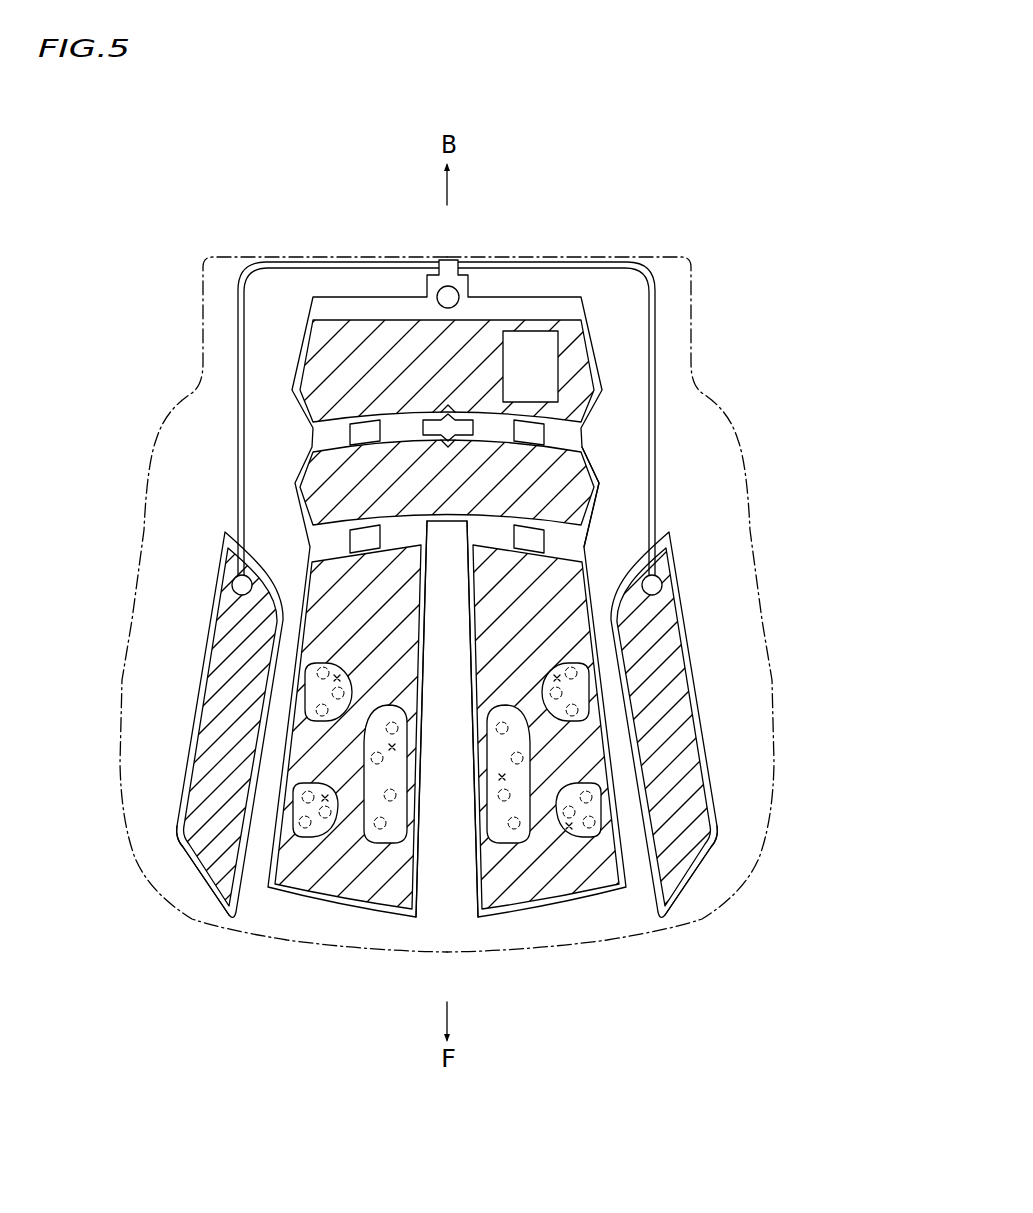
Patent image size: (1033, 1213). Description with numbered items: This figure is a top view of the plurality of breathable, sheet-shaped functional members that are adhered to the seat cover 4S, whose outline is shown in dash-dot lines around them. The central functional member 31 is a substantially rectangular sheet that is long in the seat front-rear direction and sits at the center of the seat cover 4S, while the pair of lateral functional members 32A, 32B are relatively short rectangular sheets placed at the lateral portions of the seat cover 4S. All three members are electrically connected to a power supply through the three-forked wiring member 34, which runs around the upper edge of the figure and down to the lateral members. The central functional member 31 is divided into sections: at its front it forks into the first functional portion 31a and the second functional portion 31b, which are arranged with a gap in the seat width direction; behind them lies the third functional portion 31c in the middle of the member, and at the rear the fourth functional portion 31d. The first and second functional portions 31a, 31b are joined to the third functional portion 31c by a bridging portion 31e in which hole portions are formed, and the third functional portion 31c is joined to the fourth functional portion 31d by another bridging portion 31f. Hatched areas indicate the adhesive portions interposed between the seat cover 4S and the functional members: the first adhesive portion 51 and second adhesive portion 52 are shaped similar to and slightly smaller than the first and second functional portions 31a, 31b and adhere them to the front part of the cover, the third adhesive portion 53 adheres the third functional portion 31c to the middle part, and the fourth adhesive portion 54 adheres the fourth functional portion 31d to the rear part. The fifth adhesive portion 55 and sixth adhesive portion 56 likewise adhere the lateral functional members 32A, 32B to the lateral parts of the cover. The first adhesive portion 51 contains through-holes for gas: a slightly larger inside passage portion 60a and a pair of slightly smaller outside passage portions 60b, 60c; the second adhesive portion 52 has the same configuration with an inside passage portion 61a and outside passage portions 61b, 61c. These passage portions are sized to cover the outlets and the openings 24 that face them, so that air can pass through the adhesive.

The seat cover 4S is at (752, 534).
The three-forked wiring member 34 is at (544, 262).
The fourth adhesive portion 54 is at (343, 347).
The third adhesive portion 53 is at (325, 478).
The first adhesive portion 51 is at (362, 897).
The second adhesive portion 52 is at (548, 893).
The central functional member 31 is at (332, 907).
The first functional portion 31a is at (417, 895).
The second functional portion 31b is at (477, 895).
The third functional portion 31c is at (593, 477).
The fourth functional portion 31d is at (590, 347).
The bridging portion 31e is at (330, 547).
The bridging portion 31f is at (323, 443).
The fifth adhesive portion 55 is at (217, 668).
The sixth adhesive portion 56 is at (677, 680).
The lateral functional member 32A is at (188, 868).
The lateral functional member 32B is at (706, 868).
The inside passage portion 60a is at (392, 747).
The outside passage portion 60b is at (337, 678).
The outside passage portion 60c is at (325, 798).
The inside passage portion 61a is at (503, 777).
The outside passage portion 61b is at (558, 677).
The outside passage portion 61c is at (570, 826).
The openings 24 is at (589, 828).